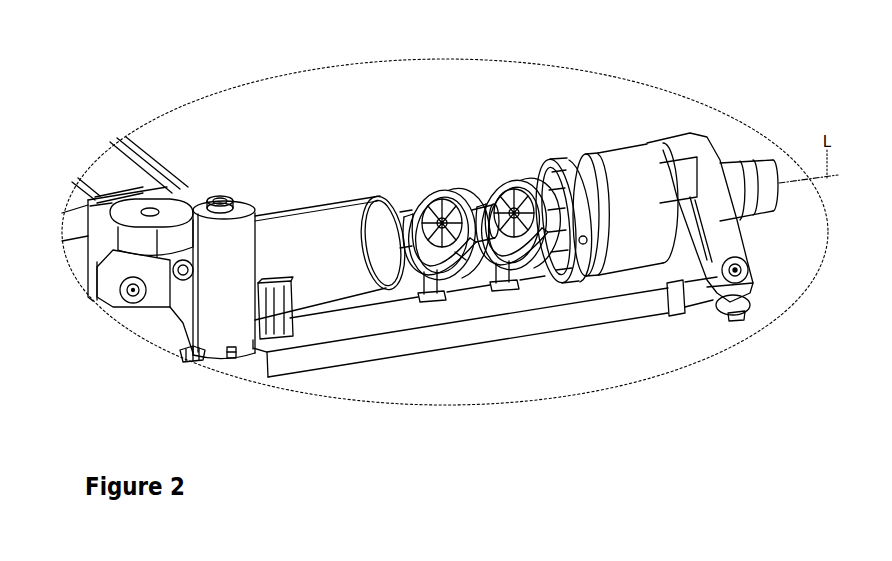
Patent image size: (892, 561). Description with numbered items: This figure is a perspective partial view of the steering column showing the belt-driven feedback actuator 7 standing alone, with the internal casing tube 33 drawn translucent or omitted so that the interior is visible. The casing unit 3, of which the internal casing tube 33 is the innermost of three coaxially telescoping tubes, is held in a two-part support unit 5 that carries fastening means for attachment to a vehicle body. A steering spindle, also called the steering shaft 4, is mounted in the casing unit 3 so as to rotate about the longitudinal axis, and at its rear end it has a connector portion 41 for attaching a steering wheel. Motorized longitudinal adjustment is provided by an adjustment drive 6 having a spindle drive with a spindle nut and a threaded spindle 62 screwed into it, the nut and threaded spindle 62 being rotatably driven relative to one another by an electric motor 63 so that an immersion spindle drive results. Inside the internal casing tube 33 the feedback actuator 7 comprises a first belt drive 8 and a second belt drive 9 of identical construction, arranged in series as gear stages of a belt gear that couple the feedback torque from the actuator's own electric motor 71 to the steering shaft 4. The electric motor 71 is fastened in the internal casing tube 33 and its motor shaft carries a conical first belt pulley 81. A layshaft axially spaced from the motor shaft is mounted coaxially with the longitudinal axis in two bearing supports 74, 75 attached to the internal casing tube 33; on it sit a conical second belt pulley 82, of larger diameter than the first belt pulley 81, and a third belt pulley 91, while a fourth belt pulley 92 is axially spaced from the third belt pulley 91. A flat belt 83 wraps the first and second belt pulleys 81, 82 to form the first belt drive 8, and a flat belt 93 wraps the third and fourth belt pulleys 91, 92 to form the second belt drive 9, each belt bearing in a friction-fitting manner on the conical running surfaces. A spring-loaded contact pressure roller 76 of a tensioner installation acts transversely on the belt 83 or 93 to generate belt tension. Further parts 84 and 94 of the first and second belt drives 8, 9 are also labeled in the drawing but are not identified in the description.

The casing unit 3 is at (72, 224).
The support unit 5 is at (103, 175).
The feedback actuator 7 is at (377, 127).
The electric motor 71 is at (303, 200).
The threaded spindle 62 is at (313, 358).
The electric motor 63 is at (213, 335).
The adjustment drive 6 is at (233, 371).
The first belt drive 8 is at (480, 242).
The second belt drive 9 is at (546, 288).
The contact pressure roller 76 is at (448, 191).
The third belt pulley 91 is at (486, 208).
The belt 93 is at (548, 170).
The internal casing tube 33 is at (607, 172).
The steering spindle 4 is at (721, 160).
The connector portion 41 is at (763, 163).
The first belt pulley 81 is at (411, 278).
The bearing support 74 is at (441, 300).
The belt 83 is at (452, 276).
The shaft stub 84 is at (460, 262).
The second belt pulley 82 is at (480, 254).
The bearing support 75 is at (514, 289).
The second strap 94 is at (532, 268).
The fourth belt pulley 92 is at (553, 265).